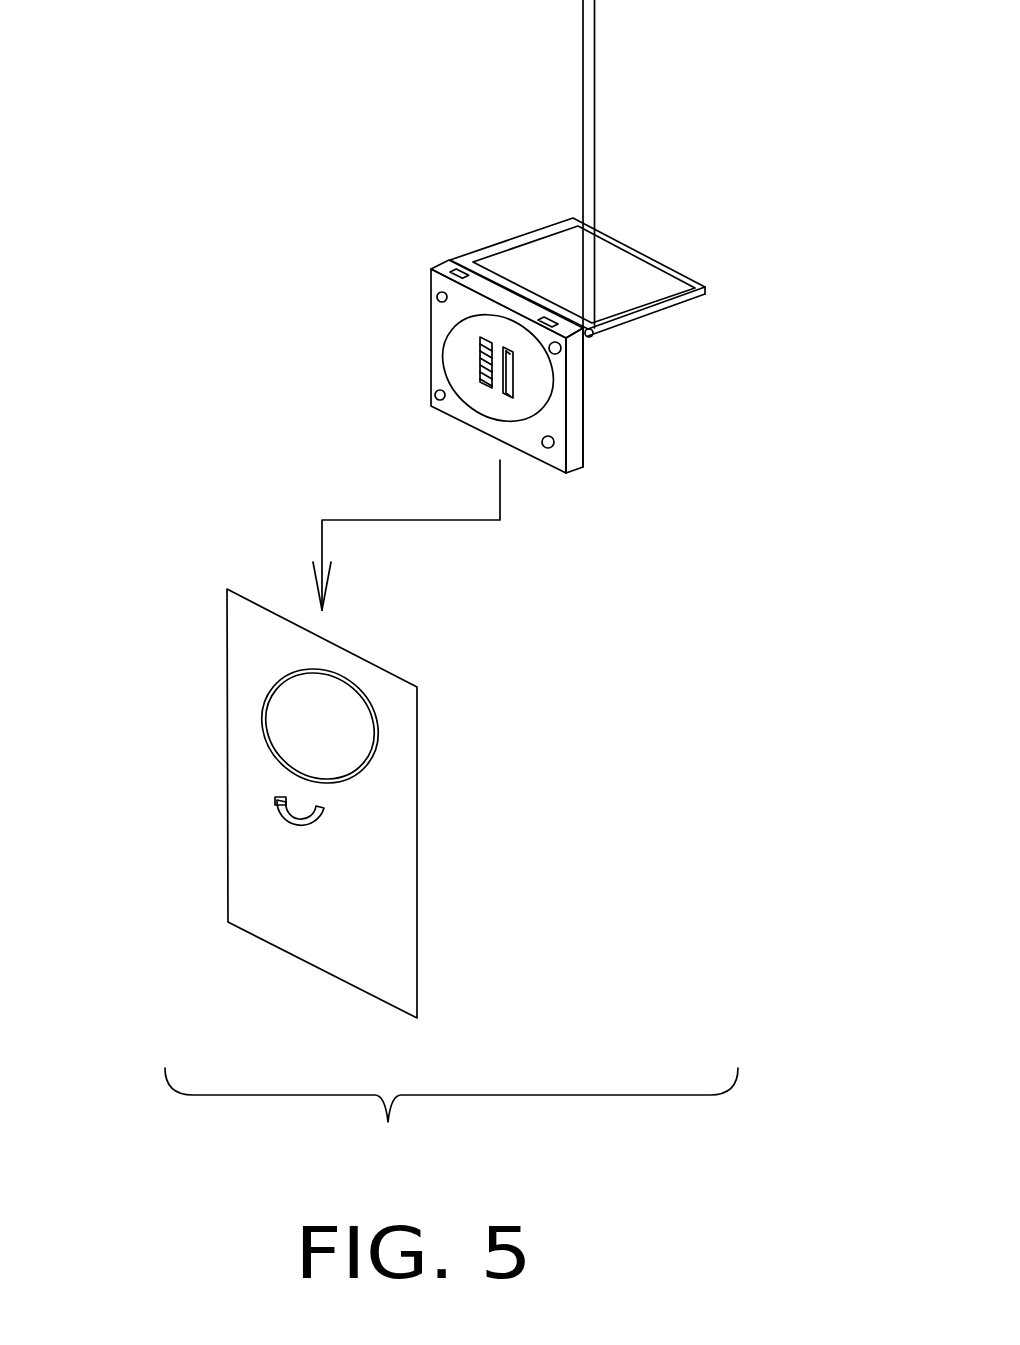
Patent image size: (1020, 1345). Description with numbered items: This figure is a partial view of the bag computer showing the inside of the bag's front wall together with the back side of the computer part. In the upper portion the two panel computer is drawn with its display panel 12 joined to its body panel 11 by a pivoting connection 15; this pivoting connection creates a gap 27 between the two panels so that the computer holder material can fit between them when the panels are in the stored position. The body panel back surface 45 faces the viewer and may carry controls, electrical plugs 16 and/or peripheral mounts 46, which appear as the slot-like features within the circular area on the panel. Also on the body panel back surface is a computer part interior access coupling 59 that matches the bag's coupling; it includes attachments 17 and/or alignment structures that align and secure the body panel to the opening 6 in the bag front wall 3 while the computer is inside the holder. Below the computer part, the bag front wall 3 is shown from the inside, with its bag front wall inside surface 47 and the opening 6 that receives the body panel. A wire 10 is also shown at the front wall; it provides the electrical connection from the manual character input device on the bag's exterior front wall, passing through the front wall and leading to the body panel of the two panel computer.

The gap 27 is at (490, 25).
The body panel 11 is at (492, 400).
The display panel 12 is at (609, 277).
The pivoting connection 15 is at (593, 333).
The body panel back surface 45 is at (442, 319).
The electrical plugs 16 is at (482, 376).
The peripheral mounts 46 is at (510, 382).
The computer part interior access coupling 59 is at (550, 413).
The attachments 17 is at (548, 448).
The bag front wall inside surface 47 is at (263, 650).
The opening 6 is at (317, 733).
The wire 10 is at (273, 830).
The bag front wall 3 is at (319, 793).